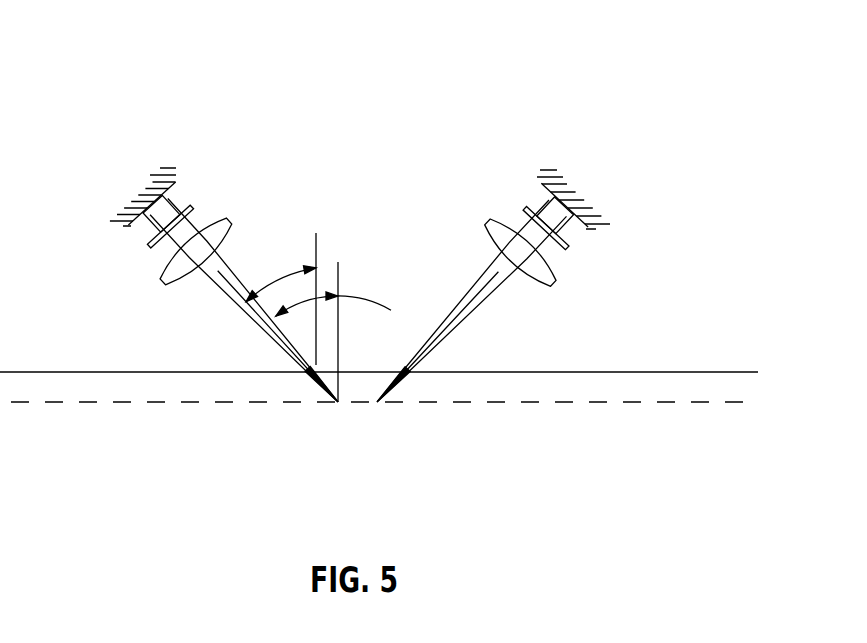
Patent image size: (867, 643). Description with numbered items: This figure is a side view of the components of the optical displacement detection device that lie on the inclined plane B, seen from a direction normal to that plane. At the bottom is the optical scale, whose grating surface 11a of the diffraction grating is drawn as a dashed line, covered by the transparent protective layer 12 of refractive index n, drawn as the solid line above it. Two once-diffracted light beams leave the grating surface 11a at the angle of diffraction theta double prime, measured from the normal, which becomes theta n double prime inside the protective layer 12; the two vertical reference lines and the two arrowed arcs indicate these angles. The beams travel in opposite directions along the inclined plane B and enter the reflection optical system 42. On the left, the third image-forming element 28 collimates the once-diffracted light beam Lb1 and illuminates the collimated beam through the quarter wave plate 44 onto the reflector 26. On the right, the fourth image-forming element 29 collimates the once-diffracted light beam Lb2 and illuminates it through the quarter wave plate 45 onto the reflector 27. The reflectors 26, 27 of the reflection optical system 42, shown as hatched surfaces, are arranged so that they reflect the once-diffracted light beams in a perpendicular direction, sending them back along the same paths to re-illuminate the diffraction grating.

The reflection optical system 42 is at (357, 130).
The reflector 26 is at (140, 182).
The reflector 27 is at (570, 183).
The quarter wave plate 44 is at (150, 248).
The quarter wave plate 45 is at (562, 252).
The third image-forming element 28 is at (163, 282).
The fourth image-forming element 29 is at (553, 282).
The transparent protective layer 12 is at (680, 385).
The grating surface 11a is at (663, 403).